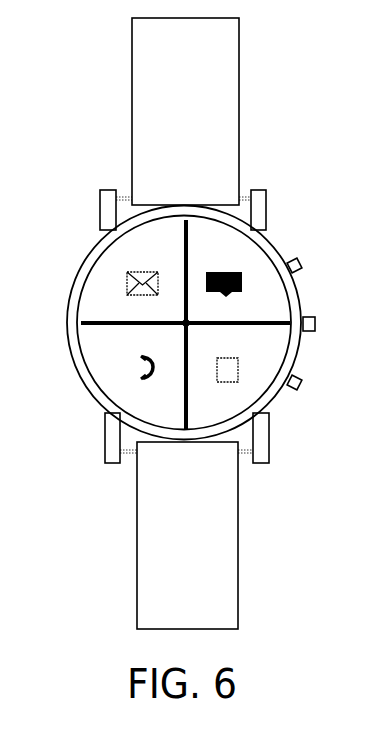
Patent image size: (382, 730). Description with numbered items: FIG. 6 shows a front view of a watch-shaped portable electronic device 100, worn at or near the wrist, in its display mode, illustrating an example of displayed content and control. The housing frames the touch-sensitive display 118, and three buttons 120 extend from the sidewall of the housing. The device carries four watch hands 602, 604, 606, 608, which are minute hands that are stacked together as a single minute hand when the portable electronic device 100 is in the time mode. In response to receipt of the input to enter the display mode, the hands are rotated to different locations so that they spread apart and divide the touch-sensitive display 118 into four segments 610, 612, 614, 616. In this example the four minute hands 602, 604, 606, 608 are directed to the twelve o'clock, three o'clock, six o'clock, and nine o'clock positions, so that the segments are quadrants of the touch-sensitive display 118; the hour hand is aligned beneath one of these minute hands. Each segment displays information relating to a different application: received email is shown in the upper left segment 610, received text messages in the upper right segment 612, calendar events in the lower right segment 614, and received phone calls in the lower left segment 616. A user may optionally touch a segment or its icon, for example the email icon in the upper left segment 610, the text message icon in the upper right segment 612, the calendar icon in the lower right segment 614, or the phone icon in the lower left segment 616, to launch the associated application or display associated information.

The portable electronic device 100 is at (282, 500).
The touch-sensitive display 118 is at (282, 360).
The buttons 120 is at (300, 259).
The watch hand 602 is at (188, 250).
The watch hand 604 is at (278, 321).
The watch hand 606 is at (186, 408).
The watch hand 608 is at (103, 326).
The upper left segment 610 is at (107, 297).
The upper right segment 612 is at (253, 273).
The lower right segment 614 is at (255, 380).
The lower left segment 616 is at (112, 393).